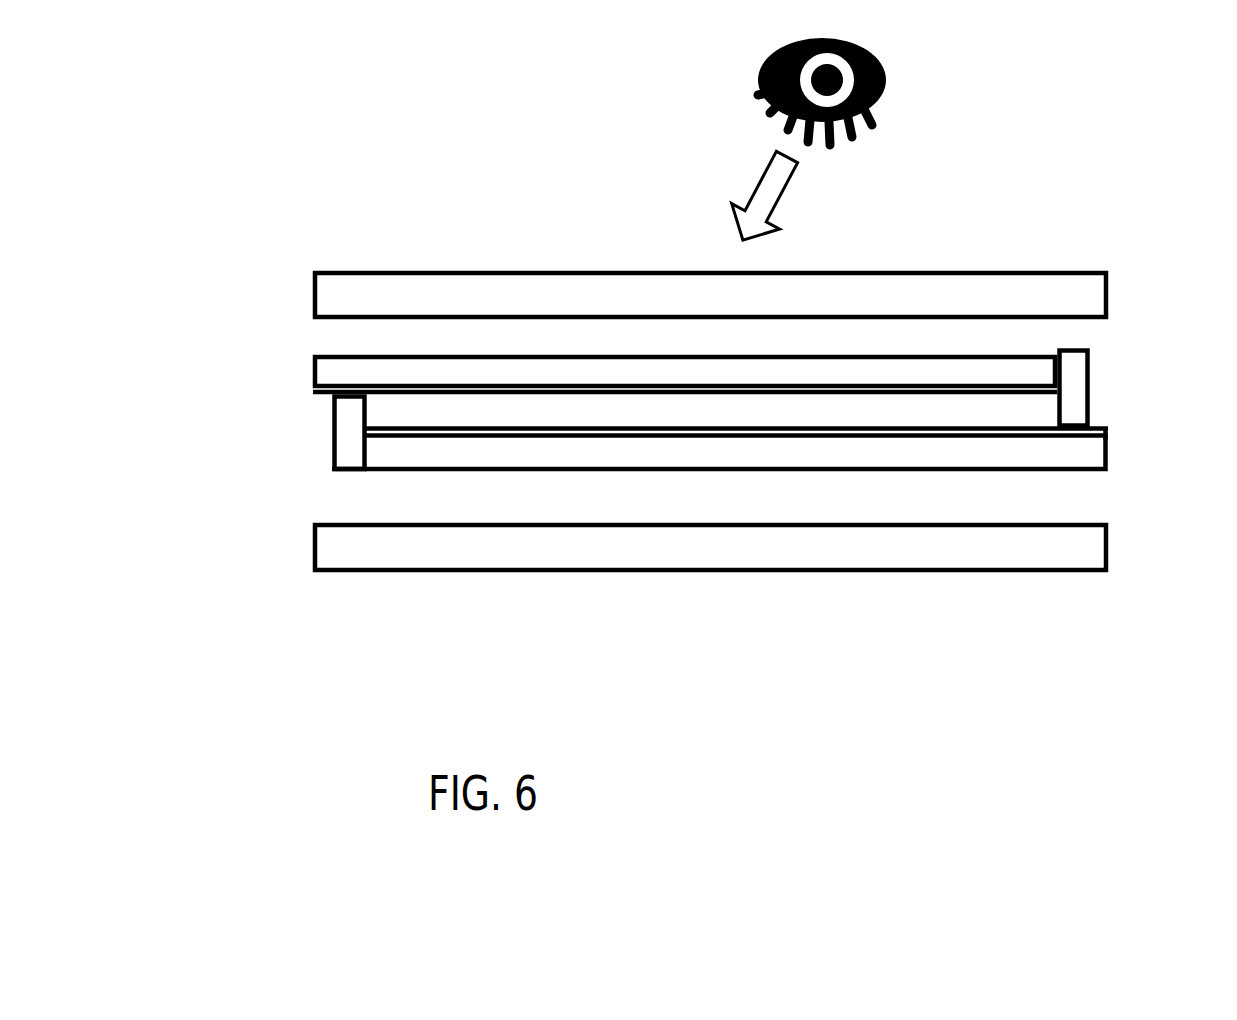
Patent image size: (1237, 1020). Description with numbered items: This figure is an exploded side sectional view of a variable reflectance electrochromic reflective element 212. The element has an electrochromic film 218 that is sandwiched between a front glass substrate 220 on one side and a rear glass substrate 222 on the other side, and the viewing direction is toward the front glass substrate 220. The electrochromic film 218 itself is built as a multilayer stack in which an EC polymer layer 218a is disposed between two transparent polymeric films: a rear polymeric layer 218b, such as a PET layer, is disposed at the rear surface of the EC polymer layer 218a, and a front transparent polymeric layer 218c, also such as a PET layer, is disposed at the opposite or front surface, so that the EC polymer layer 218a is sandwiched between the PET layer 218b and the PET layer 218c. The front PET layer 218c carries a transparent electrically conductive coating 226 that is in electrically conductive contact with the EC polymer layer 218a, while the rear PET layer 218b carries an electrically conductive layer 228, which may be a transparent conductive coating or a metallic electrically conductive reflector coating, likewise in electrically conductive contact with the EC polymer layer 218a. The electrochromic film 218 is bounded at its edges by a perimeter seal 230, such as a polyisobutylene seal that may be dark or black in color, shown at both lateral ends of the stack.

The variable reflectance electrochromic reflective element 212 is at (1060, 178).
The electrochromic film 218 is at (703, 423).
The EC polymer layer 218a is at (998, 418).
The rear polymeric layer 218b is at (952, 467).
The front transparent polymeric layer 218c is at (313, 367).
The front glass substrate 220 is at (510, 283).
The rear glass substrate 222 is at (855, 568).
The transparent electrically conductive coating 226 is at (313, 392).
The electrically conductive layer 228 is at (1088, 432).
The perimeter seal 230 is at (343, 440).